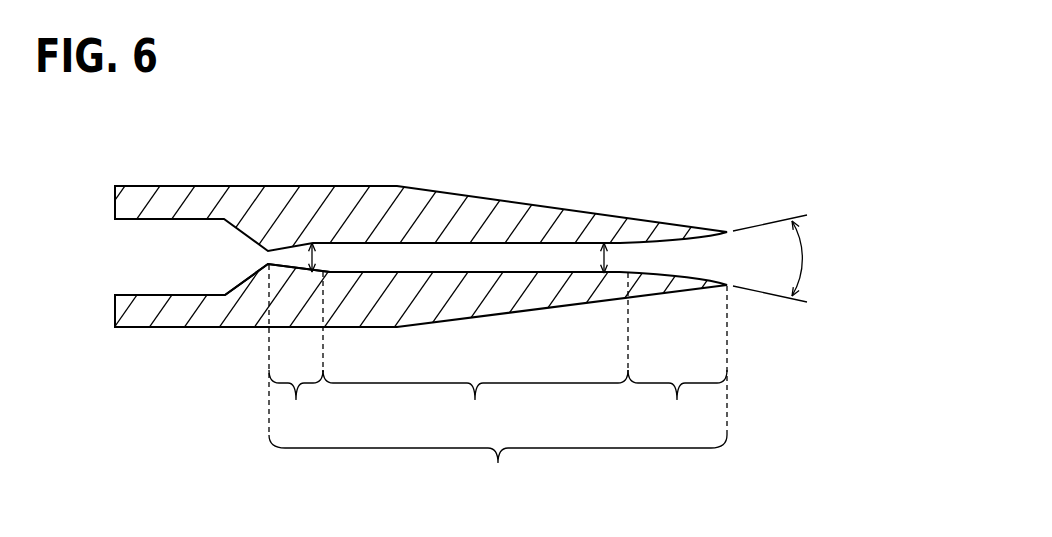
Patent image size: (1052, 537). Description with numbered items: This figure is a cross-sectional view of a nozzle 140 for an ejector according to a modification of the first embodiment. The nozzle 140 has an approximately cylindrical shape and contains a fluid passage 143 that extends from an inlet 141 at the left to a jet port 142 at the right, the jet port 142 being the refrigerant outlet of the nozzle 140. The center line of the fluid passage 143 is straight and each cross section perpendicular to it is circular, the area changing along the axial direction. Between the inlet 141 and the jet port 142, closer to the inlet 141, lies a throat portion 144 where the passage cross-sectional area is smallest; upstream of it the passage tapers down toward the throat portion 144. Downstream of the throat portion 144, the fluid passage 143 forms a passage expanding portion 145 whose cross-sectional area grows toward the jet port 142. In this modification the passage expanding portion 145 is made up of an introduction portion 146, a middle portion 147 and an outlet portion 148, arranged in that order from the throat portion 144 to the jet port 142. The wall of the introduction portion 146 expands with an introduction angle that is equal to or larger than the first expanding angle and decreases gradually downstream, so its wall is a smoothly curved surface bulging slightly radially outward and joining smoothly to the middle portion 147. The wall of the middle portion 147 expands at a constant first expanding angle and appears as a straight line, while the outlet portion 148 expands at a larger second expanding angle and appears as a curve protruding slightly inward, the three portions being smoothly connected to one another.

The nozzle 140 is at (630, 133).
The inlet 141 is at (118, 255).
The jet port 142 is at (723, 258).
The fluid passage 143 is at (472, 258).
The throat portion 144 is at (268, 257).
The passage expanding portion 145 is at (498, 467).
The introduction portion 146 is at (296, 350).
The middle portion 147 is at (475, 353).
The outlet portion 148 is at (677, 360).